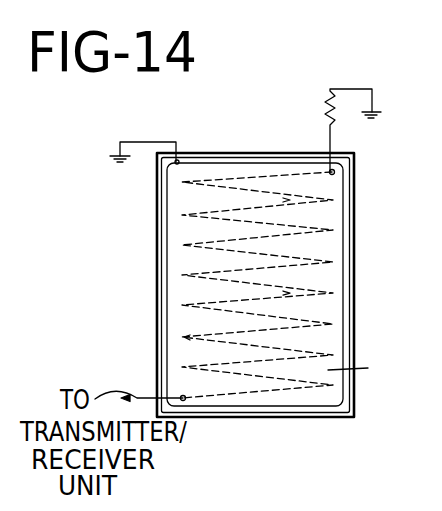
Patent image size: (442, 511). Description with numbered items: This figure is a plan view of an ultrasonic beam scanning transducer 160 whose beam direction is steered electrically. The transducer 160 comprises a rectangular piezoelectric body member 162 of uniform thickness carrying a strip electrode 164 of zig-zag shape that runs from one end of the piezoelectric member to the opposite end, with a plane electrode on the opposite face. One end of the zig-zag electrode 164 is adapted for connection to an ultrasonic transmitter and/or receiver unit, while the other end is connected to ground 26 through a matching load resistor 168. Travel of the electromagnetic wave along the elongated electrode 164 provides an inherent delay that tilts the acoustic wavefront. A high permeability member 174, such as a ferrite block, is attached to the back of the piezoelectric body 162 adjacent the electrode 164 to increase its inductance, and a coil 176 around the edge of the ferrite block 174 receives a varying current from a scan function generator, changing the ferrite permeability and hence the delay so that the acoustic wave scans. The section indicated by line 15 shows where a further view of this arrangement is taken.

The section line 15- 15 is at (283, 122).
The ground 26 is at (115, 164).
The ultrasonic beam scanning transducer 160 is at (147, 222).
The piezoelectric body member 162 is at (157, 267).
The zig-zag electrode 164 is at (185, 337).
The matching load resistor 168 is at (327, 98).
The high permeability member 174 is at (367, 368).
The coil 176 is at (163, 350).